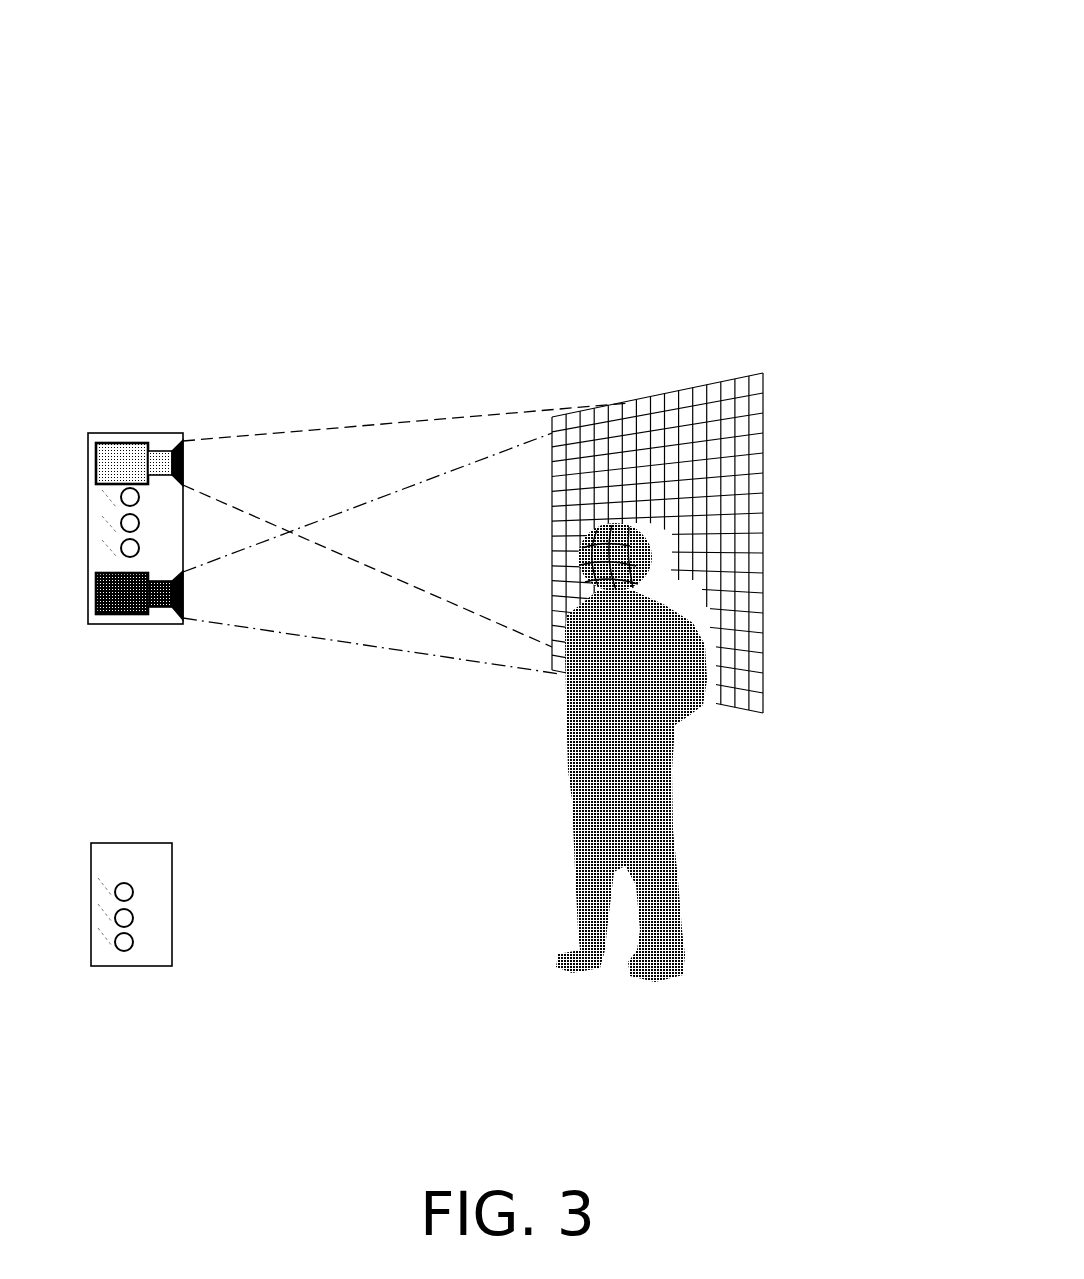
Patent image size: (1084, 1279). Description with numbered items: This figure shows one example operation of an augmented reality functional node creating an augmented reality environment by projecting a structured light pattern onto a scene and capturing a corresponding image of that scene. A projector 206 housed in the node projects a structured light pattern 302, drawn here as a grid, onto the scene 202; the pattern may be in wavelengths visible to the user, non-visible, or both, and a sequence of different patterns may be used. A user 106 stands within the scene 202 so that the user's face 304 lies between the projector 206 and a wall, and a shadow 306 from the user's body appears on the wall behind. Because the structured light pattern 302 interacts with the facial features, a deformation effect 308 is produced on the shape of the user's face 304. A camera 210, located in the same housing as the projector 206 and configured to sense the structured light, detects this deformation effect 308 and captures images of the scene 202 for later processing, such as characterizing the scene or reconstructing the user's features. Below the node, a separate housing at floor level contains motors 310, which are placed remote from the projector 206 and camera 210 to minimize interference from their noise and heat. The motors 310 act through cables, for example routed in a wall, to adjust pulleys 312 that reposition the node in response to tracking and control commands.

The projector 206 is at (123, 464).
The camera 210 is at (137, 600).
The pulleys 312 is at (139, 545).
The motors 310 is at (133, 935).
The structured light pattern 302 is at (555, 432).
The scene 202 is at (778, 715).
The user's face 304 is at (486, 534).
The shadow 306 is at (662, 538).
The deformation effect 308 is at (479, 654).
The user 106 is at (687, 720).